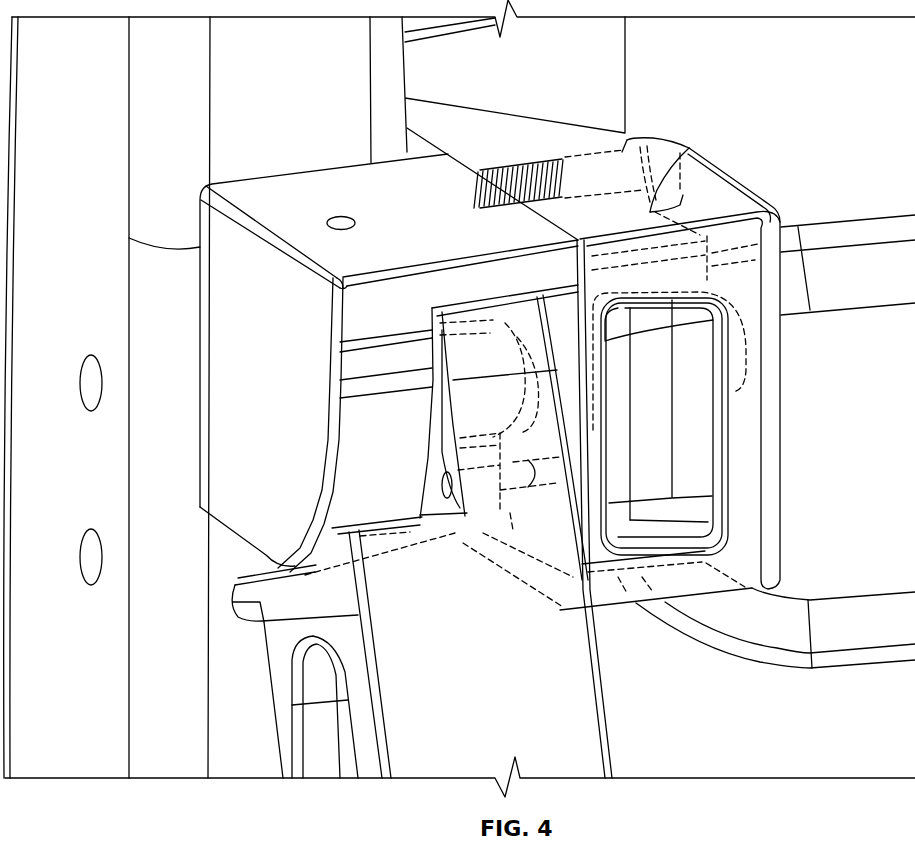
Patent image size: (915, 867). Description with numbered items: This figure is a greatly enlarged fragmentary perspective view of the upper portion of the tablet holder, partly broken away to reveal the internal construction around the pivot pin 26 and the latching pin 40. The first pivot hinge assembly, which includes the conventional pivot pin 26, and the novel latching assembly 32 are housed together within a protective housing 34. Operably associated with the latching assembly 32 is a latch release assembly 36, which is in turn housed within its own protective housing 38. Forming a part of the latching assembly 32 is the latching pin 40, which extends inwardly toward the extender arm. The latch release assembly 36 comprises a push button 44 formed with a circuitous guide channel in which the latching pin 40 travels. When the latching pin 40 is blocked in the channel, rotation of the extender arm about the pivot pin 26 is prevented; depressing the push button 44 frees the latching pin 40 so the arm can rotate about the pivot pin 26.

The pivot pin 26 is at (490, 366).
The latching assembly 32 is at (740, 421).
The protective housing 34 is at (292, 185).
The latch release assembly 36 is at (760, 195).
The protective housing 38 is at (689, 148).
The latching pin 40 is at (487, 490).
The push button 44 is at (688, 450).